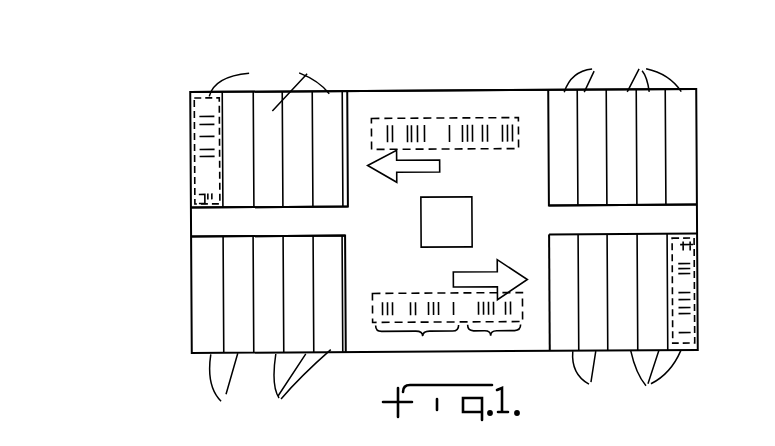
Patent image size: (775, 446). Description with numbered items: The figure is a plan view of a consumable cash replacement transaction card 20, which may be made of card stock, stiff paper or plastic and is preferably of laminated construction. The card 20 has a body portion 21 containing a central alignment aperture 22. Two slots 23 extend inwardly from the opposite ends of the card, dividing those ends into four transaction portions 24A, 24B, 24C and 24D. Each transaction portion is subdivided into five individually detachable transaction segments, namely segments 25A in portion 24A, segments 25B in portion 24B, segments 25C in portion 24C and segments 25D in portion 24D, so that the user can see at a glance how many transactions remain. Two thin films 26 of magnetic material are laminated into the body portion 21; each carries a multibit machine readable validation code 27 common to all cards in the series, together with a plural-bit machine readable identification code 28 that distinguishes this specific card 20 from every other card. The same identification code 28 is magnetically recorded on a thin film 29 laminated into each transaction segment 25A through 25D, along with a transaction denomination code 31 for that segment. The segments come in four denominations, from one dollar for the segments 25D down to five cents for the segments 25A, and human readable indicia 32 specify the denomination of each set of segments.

The consumable cash replacement transaction card 20 is at (358, 374).
The body portion 21 is at (497, 80).
The central alignment aperture 22 is at (421, 228).
The slot 23 is at (192, 228).
The transaction portion 24A is at (191, 322).
The transaction portion 24B is at (191, 155).
The transaction portion 24C is at (698, 281).
The transaction portion 24D is at (697, 152).
The transaction segment 25A is at (271, 383).
The transaction segment 25B is at (269, 89).
The transaction segment 25C is at (627, 377).
The transaction segment 25D is at (622, 71).
The thin film of magnetic material 26 is at (497, 150).
The multibit machine readable validation code 27 is at (490, 336).
The plural-bit machine readable identification code 28 is at (700, 307).
The thin film 29 is at (698, 261).
The transaction denomination code 31 is at (198, 197).
The human readable indicia 32 is at (375, 176).